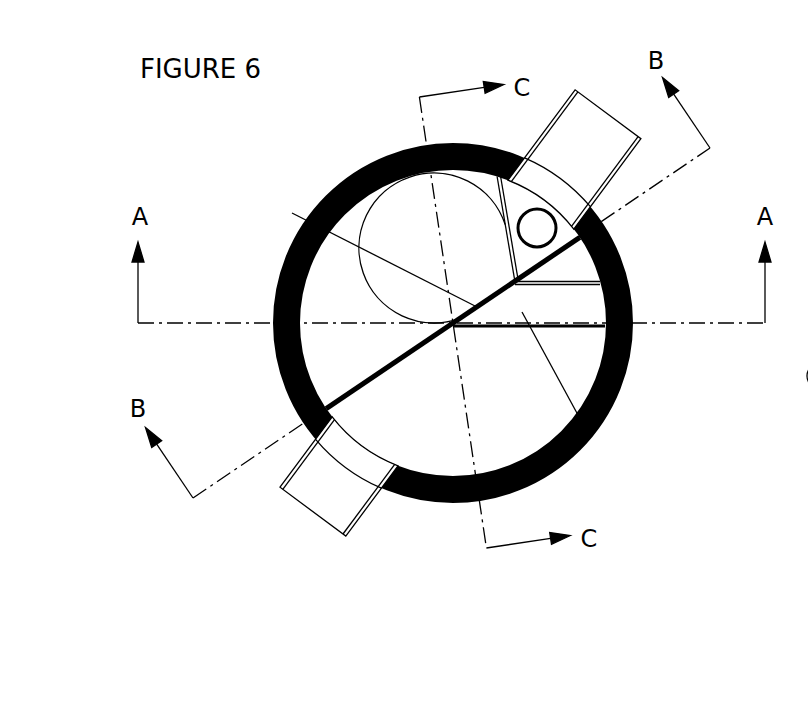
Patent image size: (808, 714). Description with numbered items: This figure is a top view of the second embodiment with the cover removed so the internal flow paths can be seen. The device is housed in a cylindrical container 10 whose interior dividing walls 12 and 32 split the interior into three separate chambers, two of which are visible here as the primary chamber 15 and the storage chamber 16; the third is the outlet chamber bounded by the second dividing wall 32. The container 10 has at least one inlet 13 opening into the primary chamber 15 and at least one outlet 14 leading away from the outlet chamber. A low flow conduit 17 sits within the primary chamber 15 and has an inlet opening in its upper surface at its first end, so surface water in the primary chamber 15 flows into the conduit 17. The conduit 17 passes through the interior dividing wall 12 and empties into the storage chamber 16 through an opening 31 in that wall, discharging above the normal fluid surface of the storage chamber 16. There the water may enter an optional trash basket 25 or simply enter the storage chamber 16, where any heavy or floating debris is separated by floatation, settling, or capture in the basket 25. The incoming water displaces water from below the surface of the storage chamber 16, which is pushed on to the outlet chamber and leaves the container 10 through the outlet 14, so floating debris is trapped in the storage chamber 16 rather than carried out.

The cylindrical container 10 is at (622, 390).
The interior dividing wall 12 is at (353, 389).
The inlet 13 is at (339, 476).
The outlet 14 is at (574, 159).
The primary chamber 15 is at (483, 400).
The storage chamber 16 is at (335, 297).
The low flow conduit 17 is at (587, 437).
The trash basket 25 is at (385, 193).
The opening 31 is at (372, 250).
The interior dividing wall 32 is at (494, 150).